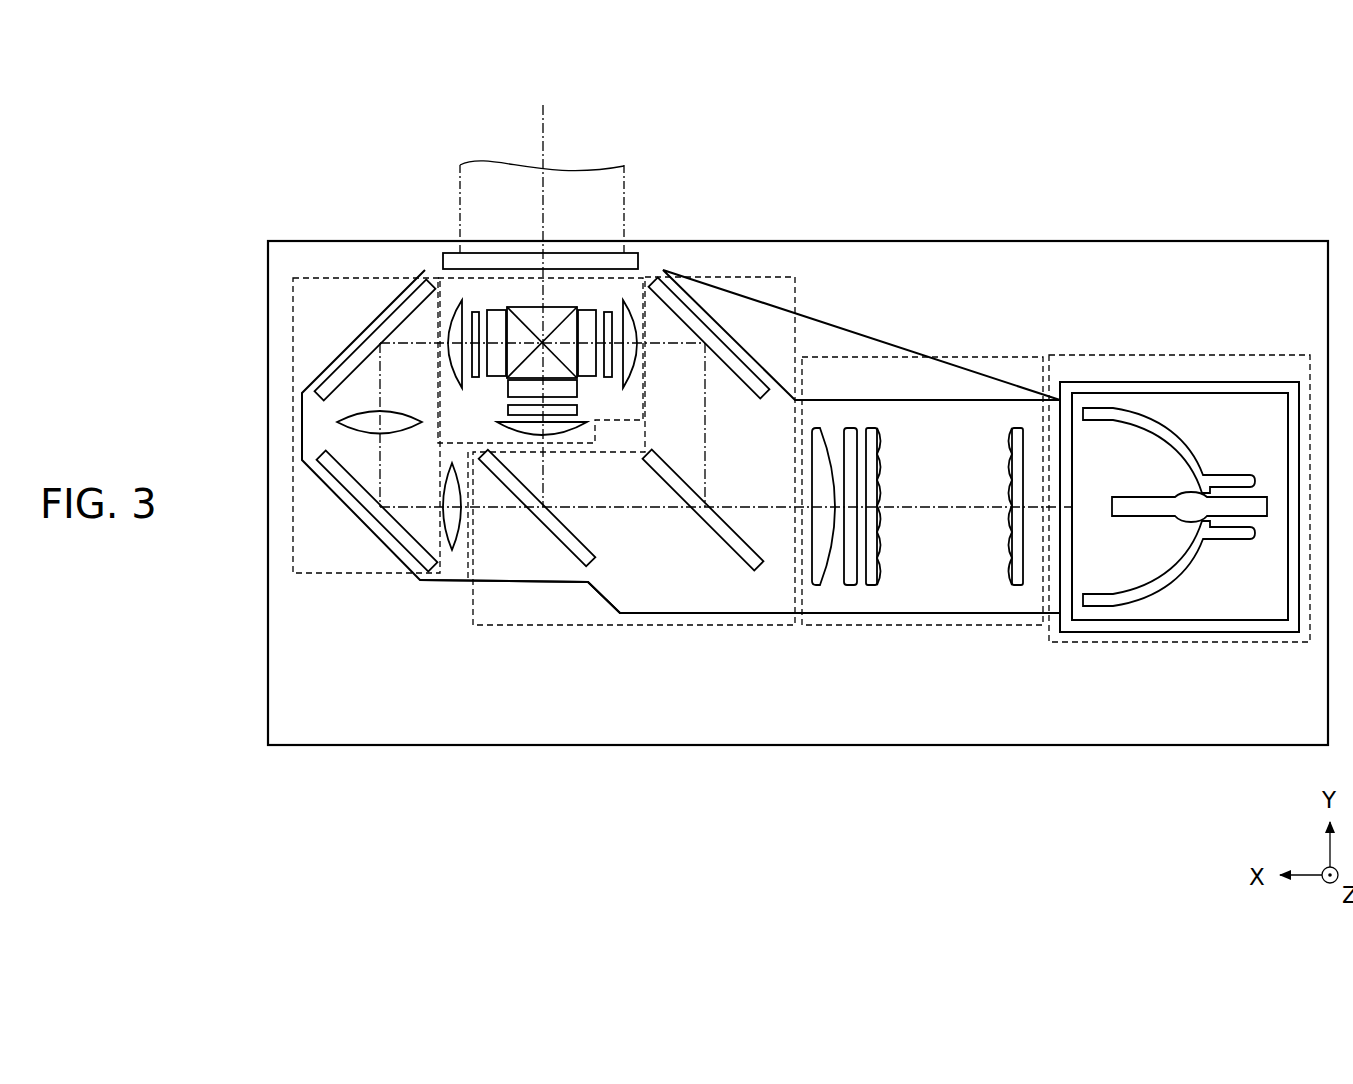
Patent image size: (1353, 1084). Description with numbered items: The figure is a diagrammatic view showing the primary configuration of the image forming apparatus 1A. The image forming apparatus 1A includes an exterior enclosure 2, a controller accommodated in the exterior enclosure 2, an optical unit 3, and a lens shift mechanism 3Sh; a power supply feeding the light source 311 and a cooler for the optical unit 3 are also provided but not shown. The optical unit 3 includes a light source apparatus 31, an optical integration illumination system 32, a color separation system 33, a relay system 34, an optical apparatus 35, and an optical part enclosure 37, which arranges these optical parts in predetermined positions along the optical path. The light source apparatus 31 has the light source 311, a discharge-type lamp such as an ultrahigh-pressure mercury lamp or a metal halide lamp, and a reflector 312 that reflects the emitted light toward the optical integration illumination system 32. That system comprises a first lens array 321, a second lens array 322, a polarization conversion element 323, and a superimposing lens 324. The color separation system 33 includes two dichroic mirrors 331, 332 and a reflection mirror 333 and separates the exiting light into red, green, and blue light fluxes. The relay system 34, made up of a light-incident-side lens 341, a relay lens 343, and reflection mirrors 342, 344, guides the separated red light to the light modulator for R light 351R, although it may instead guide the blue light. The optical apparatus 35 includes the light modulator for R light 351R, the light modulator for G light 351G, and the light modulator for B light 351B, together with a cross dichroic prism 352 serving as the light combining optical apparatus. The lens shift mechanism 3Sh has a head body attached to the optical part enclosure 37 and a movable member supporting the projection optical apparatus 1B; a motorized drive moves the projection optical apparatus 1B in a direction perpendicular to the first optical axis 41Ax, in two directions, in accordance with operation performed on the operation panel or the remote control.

The exterior enclosure 2 is at (268, 278).
The image forming apparatus 1A is at (862, 183).
The projection optical apparatus 1B is at (463, 202).
The first optical axis 41Ax is at (548, 112).
The optical unit 3 is at (367, 613).
The optical part enclosure 37 is at (550, 582).
The lens shift mechanism 3Sh is at (590, 256).
The relay system 34 is at (293, 432).
The light-incident-side lens 341 is at (454, 532).
The reflection mirror 342 is at (348, 480).
The relay lens 343 is at (393, 424).
The reflection mirror 344 is at (360, 358).
The optical apparatus 35 is at (617, 393).
The light modulator for R light 351R is at (465, 292).
The light modulator for G light 351G is at (587, 398).
The light modulator for B light 351B is at (618, 292).
The cross dichroic prism 352 is at (527, 317).
The color separation system 33 is at (663, 625).
The dichroic mirror 331 is at (737, 545).
The dichroic mirror 332 is at (570, 545).
The reflection mirror 333 is at (727, 358).
The optical integration illumination system 32 is at (851, 625).
The first lens array 321 is at (1020, 428).
The second lens array 322 is at (870, 428).
The polarization conversion element 323 is at (858, 428).
The superimposing lens 324 is at (820, 428).
The light source apparatus 31 is at (1091, 642).
The light source 311 is at (1150, 512).
The reflector 312 is at (1187, 553).